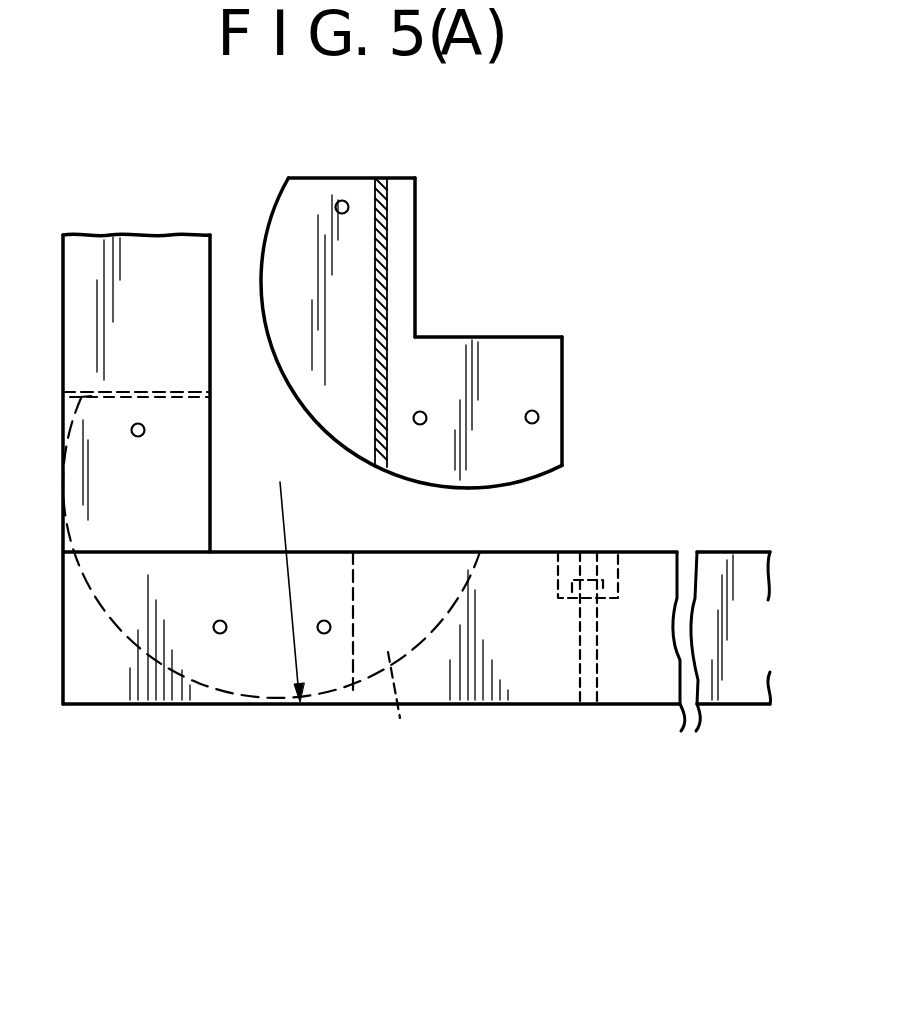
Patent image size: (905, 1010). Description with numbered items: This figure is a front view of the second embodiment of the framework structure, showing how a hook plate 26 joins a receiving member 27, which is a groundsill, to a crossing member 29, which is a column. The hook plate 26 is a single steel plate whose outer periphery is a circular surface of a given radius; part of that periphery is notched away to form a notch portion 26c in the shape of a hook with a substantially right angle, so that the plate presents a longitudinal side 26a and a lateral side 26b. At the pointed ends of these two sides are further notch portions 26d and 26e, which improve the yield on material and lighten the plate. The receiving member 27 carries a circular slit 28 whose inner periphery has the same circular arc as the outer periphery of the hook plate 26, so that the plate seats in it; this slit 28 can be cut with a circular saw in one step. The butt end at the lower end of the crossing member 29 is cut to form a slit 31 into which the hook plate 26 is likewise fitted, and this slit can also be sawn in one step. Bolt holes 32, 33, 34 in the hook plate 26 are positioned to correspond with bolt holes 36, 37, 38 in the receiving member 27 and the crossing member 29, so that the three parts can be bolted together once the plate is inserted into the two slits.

The hook plate 26 is at (300, 397).
The longitudinal side 26a is at (298, 192).
The lateral side 26b is at (535, 462).
The notch portion 26c is at (415, 261).
The notch portion 26d is at (407, 178).
The notch portion 26e is at (562, 352).
The receiving member 27 is at (553, 680).
The slit 28 is at (407, 704).
The crossing member 29 is at (170, 252).
The slit 31 is at (62, 422).
The bolt hole 32 is at (342, 200).
The bolt hole 33 is at (420, 425).
The bolt hole 34 is at (539, 417).
The bolt hole 36 is at (145, 429).
The bolt hole 37 is at (222, 634).
The bolt hole 38 is at (326, 634).